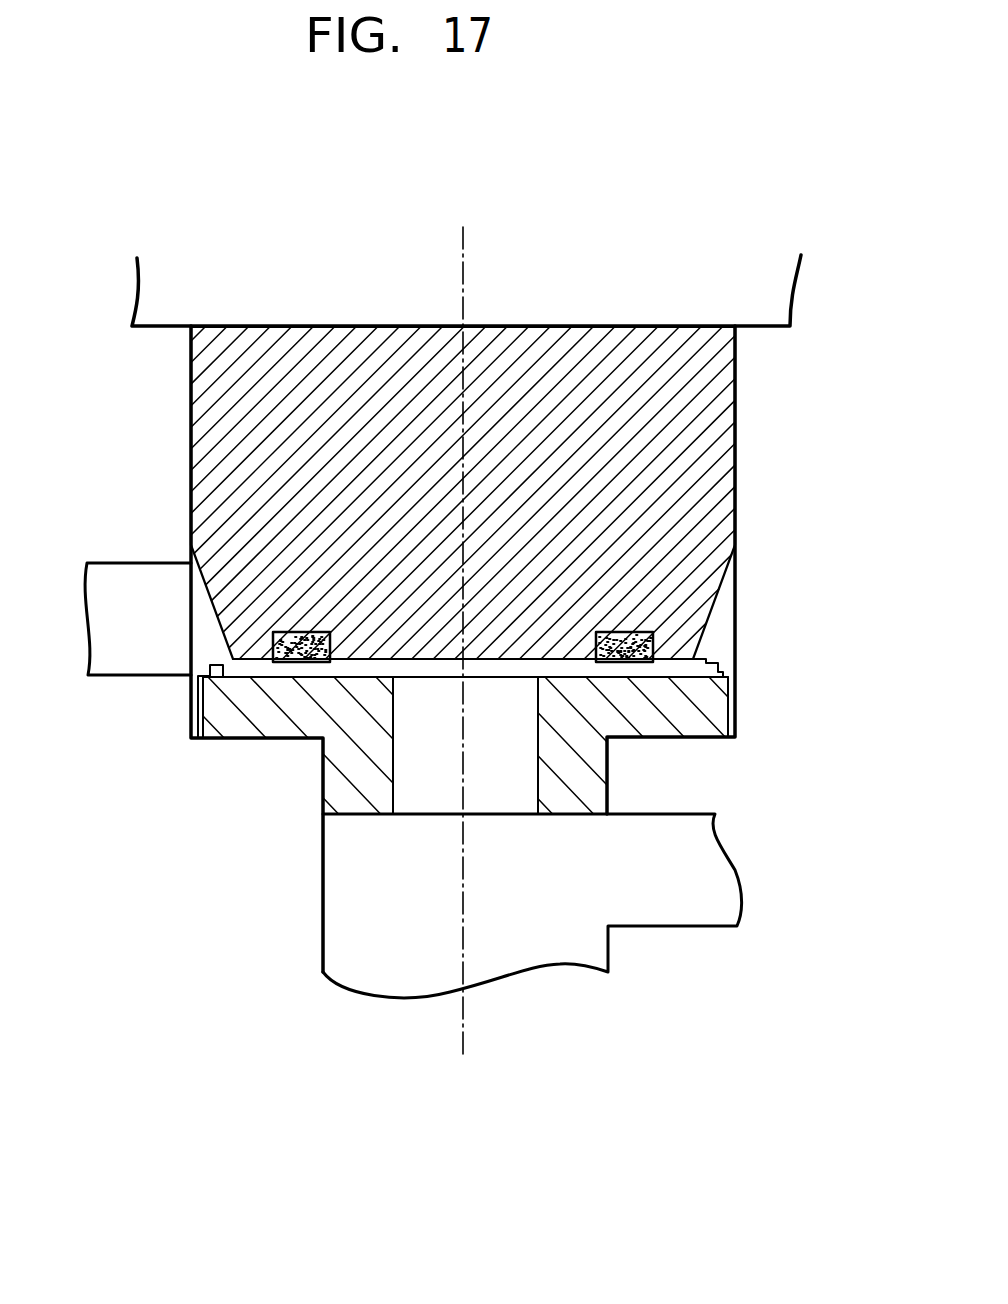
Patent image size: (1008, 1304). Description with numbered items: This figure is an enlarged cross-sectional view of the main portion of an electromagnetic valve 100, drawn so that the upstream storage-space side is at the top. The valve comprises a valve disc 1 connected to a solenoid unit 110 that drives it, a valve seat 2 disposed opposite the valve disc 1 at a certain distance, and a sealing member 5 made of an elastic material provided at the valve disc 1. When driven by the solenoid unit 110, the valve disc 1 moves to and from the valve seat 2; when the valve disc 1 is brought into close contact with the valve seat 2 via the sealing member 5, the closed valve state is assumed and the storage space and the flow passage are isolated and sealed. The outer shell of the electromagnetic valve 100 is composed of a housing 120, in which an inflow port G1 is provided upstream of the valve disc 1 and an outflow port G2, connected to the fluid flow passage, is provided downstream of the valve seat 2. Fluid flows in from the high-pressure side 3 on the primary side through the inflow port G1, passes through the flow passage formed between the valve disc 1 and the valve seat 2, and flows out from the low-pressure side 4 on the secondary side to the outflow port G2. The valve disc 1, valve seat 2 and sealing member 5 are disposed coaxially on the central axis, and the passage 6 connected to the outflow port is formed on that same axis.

The valve disc 1 is at (722, 418).
The valve seat 2 is at (596, 793).
The high-pressure side 3 is at (196, 742).
The low-pressure side 4 is at (499, 790).
The sealing member 5 is at (300, 665).
The passage 6 is at (392, 731).
The electromagnetic valve 100 is at (126, 442).
The solenoid unit 110 is at (778, 292).
The housing 120 is at (738, 683).
The inflow port G1 is at (117, 660).
The outflow port G2 is at (712, 878).